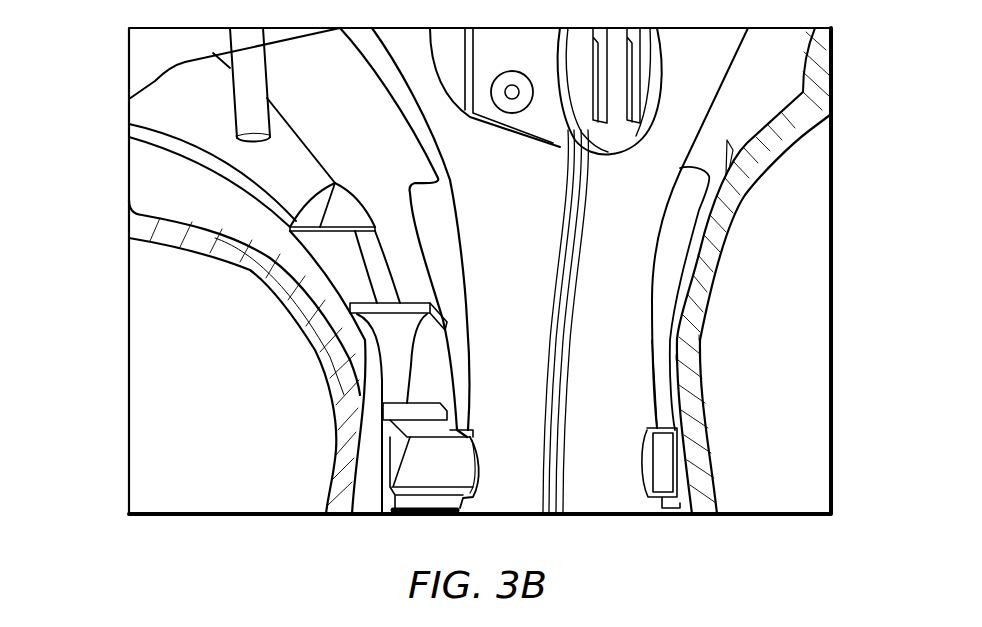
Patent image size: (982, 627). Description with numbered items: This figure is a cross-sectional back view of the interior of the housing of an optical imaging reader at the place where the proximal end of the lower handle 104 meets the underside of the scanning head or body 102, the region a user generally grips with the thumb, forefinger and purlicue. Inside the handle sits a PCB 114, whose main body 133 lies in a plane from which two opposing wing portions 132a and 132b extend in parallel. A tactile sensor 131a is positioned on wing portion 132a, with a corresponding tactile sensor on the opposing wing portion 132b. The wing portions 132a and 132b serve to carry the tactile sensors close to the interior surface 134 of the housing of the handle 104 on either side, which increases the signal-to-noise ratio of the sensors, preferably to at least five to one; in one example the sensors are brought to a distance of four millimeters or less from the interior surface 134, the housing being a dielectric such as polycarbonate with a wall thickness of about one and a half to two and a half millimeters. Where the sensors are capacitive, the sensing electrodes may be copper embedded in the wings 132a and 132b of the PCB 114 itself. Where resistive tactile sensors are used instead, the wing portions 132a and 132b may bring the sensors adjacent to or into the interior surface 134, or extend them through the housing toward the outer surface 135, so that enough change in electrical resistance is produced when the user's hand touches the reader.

The scanning head or body 102 is at (817, 65).
The lower handle 104 is at (713, 467).
The PCB 114 is at (718, 80).
The tactile sensor 131a is at (418, 230).
The wing portion 132a is at (680, 275).
The wing portion 132b is at (443, 233).
The main body 133 is at (635, 363).
The interior surface 134 is at (750, 165).
The outer surface 135 is at (700, 330).